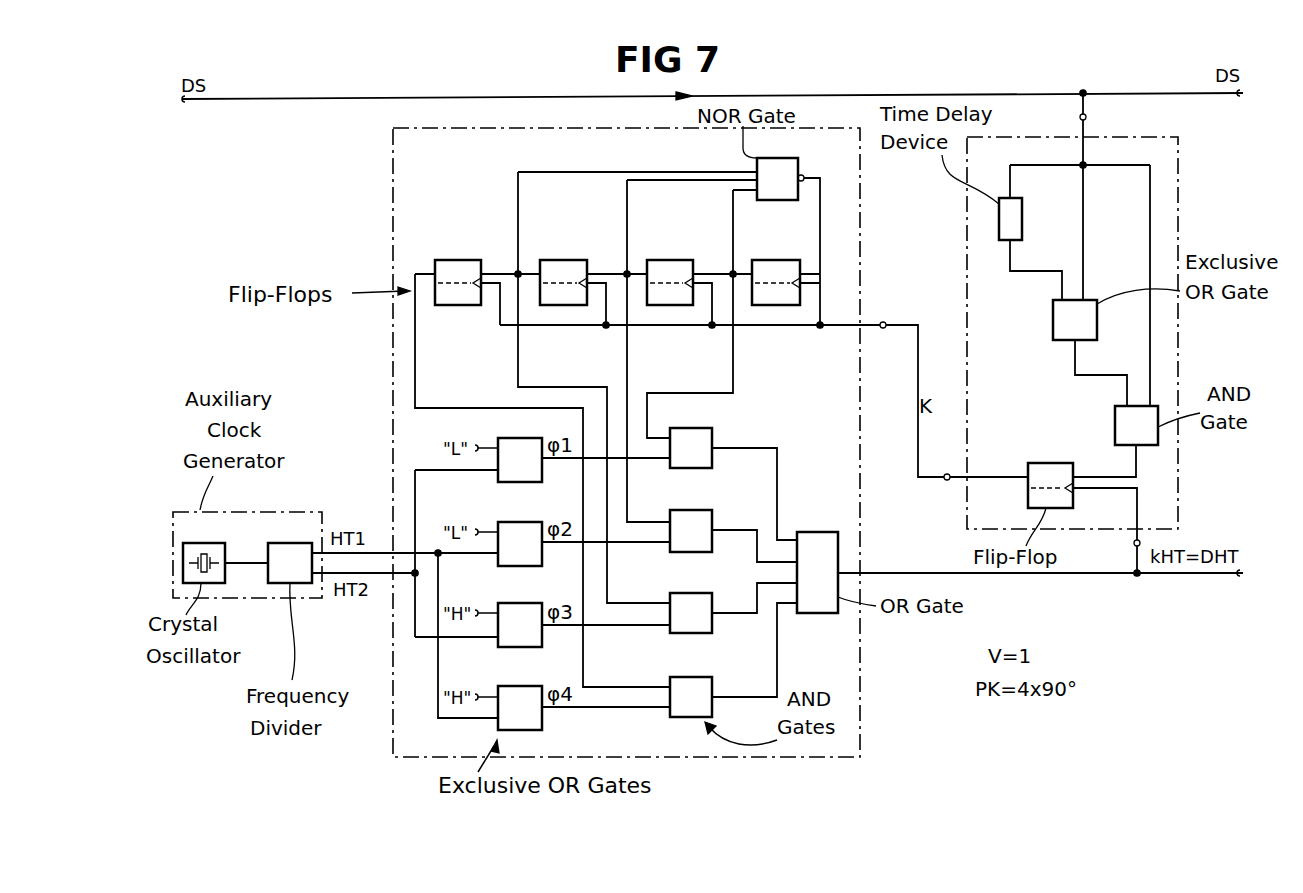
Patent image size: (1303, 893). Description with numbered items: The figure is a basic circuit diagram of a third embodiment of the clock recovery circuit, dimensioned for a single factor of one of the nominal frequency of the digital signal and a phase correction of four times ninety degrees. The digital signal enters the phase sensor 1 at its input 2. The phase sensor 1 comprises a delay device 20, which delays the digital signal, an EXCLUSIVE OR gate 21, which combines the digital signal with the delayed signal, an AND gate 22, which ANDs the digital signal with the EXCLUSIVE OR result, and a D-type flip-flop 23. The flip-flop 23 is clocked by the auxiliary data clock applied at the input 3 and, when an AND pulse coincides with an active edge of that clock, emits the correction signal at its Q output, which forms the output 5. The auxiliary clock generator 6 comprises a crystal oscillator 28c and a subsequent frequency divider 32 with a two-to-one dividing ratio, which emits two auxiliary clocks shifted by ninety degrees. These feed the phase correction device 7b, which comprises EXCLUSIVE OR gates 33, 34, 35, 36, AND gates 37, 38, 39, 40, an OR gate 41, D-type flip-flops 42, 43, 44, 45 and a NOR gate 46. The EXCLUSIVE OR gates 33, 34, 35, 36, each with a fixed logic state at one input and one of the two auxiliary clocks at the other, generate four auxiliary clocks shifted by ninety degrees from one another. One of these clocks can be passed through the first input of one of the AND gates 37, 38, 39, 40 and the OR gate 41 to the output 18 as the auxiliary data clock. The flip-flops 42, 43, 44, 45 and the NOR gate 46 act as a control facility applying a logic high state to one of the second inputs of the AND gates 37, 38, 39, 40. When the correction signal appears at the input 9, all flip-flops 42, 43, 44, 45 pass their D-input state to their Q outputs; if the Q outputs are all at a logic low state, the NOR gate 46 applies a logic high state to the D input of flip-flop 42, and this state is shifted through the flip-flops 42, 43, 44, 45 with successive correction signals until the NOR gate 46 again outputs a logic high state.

The phase sensor 1 is at (1178, 340).
The input 2 is at (1091, 129).
The input 3 is at (1129, 553).
The output 5 is at (947, 491).
The auxiliary clock generator 6 is at (236, 512).
The phase correction device 7b is at (496, 130).
The correction signal input 9 is at (882, 311).
The output 18 is at (1255, 574).
The delay device 20 is at (1025, 219).
The EXCLUSIVE OR gate 21 is at (1090, 353).
The AND gate 22 is at (1115, 441).
The D-type flip-flop 23 is at (1082, 488).
The crystal oscillator 28c is at (206, 550).
The frequency divider 32 is at (290, 550).
The EXCLUSIVE OR gate 33 is at (520, 447).
The EXCLUSIVE OR gate 34 is at (520, 531).
The EXCLUSIVE OR gate 35 is at (520, 612).
The EXCLUSIVE OR gate 36 is at (520, 695).
The AND gate 37 is at (733, 471).
The AND gate 38 is at (733, 523).
The AND gate 39 is at (733, 600).
The AND gate 40 is at (733, 660).
The OR gate 41 is at (1020, 559).
The D-type flip-flop 42 is at (776, 269).
The D-type flip-flop 43 is at (670, 269).
The D-type flip-flop 44 is at (563, 269).
The D-type flip-flop 45 is at (458, 269).
The NOR gate 46 is at (669, 229).